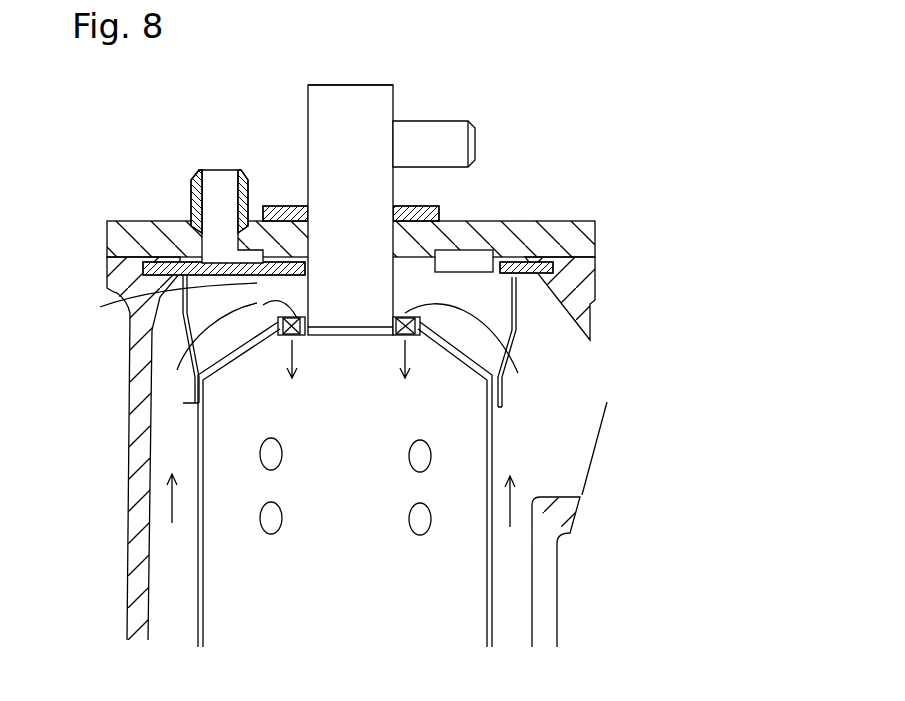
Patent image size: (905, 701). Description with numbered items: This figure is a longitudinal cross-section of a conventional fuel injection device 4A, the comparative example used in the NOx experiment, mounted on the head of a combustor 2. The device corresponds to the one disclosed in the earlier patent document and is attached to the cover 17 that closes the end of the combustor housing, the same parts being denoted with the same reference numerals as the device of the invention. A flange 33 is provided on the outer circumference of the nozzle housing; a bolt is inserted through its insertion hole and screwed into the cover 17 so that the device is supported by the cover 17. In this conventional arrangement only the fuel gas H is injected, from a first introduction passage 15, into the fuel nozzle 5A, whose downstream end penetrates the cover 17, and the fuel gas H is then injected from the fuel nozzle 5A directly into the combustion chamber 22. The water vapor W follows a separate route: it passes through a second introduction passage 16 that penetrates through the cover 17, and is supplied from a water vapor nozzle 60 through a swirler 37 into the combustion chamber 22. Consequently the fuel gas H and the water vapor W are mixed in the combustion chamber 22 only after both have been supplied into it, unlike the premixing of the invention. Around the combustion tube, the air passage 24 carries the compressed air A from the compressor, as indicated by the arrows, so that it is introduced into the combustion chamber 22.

The combustor 2 is at (137, 436).
The fuel injection device of comparative example 4A is at (404, 83).
The fuel nozzle 5A is at (308, 111).
The first introduction passage 15 is at (443, 132).
The second introduction passage 16 is at (222, 190).
The cover 17 is at (567, 222).
The combustion chamber 22 is at (365, 504).
The air passage 24 is at (172, 596).
The flange 33 is at (427, 206).
The swirler 37 is at (422, 325).
The water vapor nozzle 60 is at (186, 265).
The compressed air A is at (172, 507).
The water vapor W is at (225, 157).
The fuel gas H is at (495, 146).